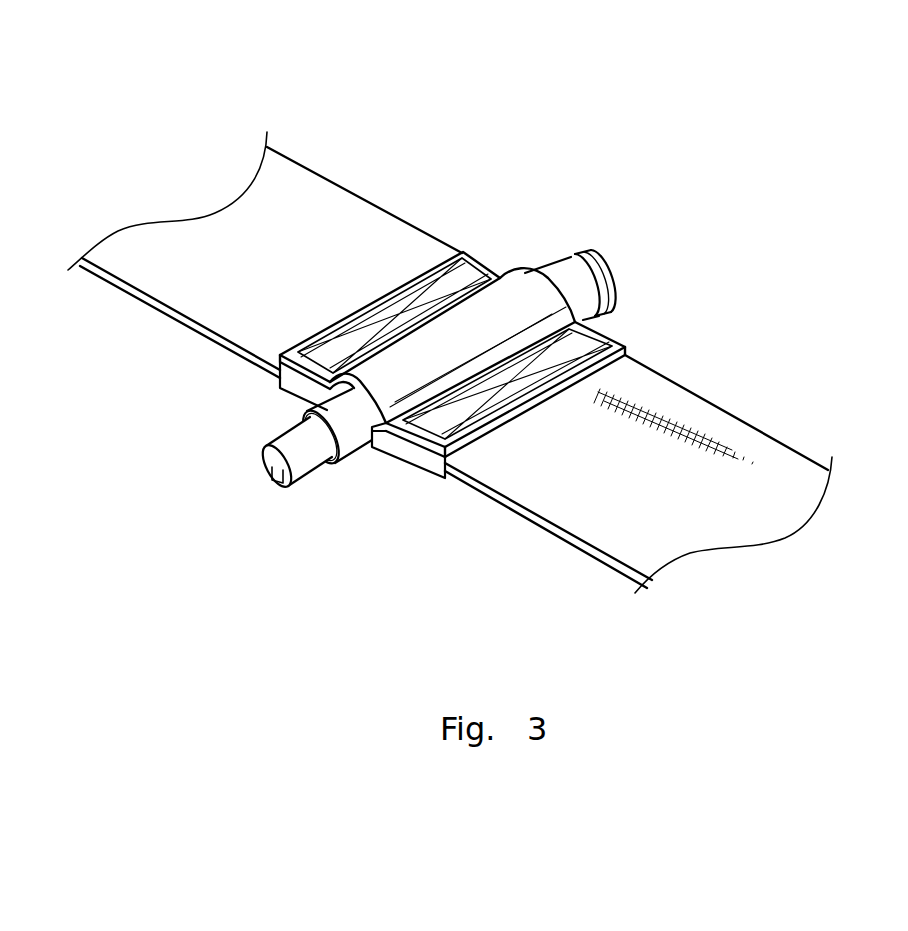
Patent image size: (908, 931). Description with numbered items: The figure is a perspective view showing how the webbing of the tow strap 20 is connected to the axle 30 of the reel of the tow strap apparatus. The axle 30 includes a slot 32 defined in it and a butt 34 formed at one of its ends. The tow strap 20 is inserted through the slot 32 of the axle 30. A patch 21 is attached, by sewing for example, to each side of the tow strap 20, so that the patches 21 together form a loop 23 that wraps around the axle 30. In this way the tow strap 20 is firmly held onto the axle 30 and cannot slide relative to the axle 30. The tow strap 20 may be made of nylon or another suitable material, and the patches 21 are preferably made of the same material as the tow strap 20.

The tow strap 20 is at (573, 506).
The patch 21 is at (615, 340).
The loop 23 is at (313, 407).
The axle 30 is at (564, 284).
The slot 32 is at (360, 446).
The butt 34 is at (607, 273).